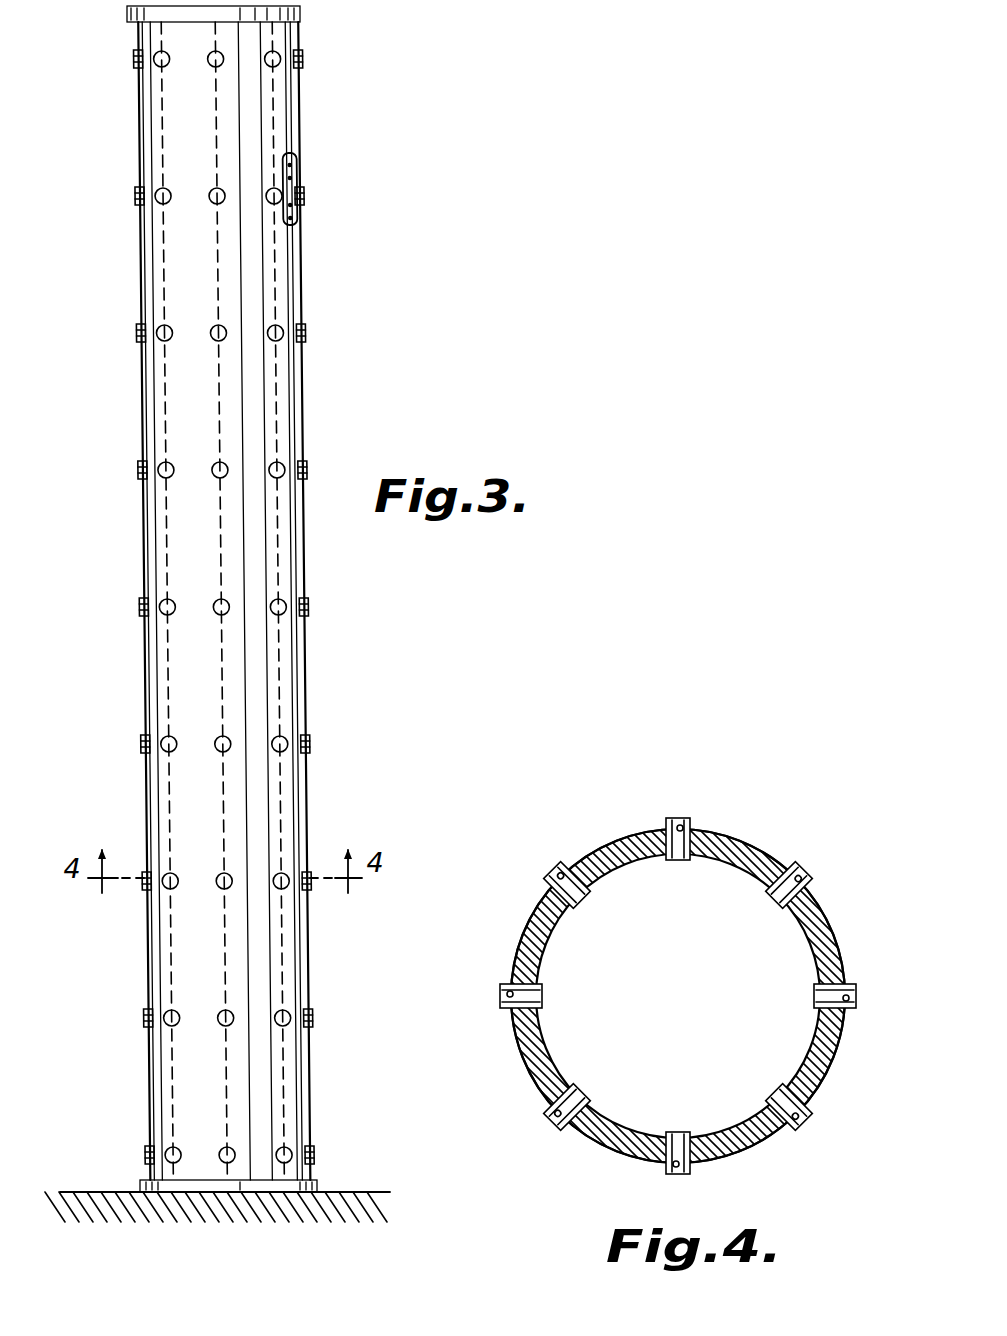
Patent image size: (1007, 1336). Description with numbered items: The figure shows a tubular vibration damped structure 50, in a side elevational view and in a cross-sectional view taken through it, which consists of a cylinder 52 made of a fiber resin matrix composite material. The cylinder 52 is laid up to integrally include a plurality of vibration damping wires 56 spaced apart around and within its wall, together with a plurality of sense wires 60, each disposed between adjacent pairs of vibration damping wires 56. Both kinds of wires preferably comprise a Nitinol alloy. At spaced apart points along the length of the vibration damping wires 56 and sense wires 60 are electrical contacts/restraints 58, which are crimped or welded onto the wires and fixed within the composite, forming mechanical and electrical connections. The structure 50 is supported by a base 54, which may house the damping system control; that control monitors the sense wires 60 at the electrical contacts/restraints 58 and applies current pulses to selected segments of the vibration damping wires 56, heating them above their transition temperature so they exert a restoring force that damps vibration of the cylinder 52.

In FIG. 3, the tubular vibration damped structure 50 is at (340, 377).
In FIG. 4, the tubular vibration damped structure 50 is at (745, 790).
In FIG. 3, the cylinder 52 is at (140, 300).
In FIG. 4, the cylinder 52 is at (628, 832).
In FIG. 3, the base 54 is at (85, 1192).
In FIG. 3, the vibration damping wires 56 is at (166, 245).
In FIG. 4, the vibration damping wires 56 is at (556, 880).
In FIG. 3, the electrical contacts/restraints 58 is at (158, 62).
In FIG. 3, the sense wires 60 is at (296, 160).
In FIG. 4, the sense wires 60 is at (680, 820).